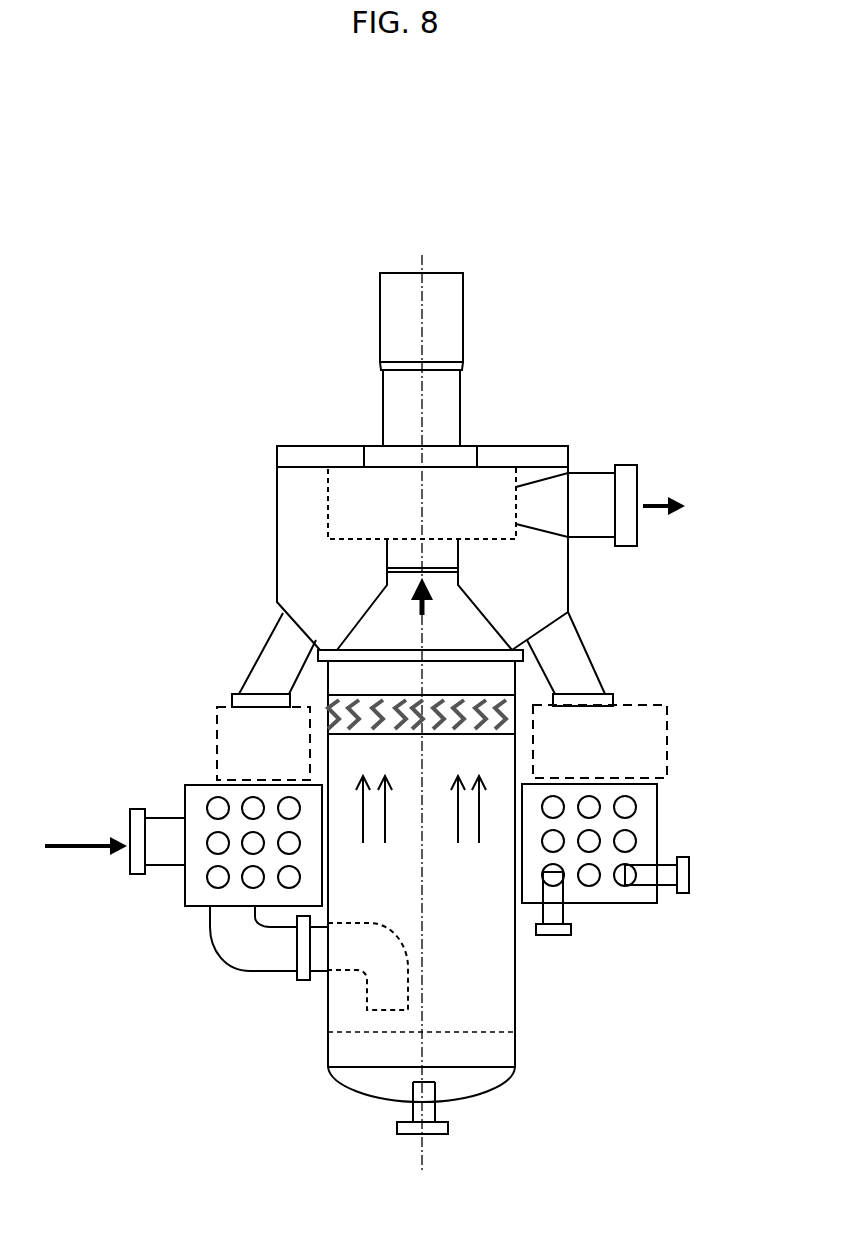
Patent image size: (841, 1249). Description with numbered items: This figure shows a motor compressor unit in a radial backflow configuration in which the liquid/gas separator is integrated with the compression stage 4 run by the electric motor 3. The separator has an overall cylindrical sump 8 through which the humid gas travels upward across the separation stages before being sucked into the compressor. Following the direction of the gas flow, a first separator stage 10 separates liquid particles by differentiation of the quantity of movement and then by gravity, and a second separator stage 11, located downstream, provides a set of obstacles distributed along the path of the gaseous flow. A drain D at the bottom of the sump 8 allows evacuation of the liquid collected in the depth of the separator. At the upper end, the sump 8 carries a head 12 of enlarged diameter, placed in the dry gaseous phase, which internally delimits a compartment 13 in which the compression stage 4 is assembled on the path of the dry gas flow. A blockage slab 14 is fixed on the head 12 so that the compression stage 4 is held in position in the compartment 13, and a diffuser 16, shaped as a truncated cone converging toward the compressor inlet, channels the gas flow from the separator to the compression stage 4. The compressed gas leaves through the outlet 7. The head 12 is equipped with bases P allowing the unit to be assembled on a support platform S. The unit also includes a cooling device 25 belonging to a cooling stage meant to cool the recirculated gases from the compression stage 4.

The motor 3 is at (368, 340).
The compression stage 4 is at (368, 498).
The outlet 7 is at (626, 456).
The sump 8 is at (516, 997).
The first separator stage 10 is at (345, 1033).
The second separator stage 11 is at (458, 706).
The head 12 is at (277, 552).
The compartment 13 is at (556, 581).
The blockage slab 14 is at (530, 460).
The diffuser 16 is at (494, 610).
The cooling device 25 is at (642, 827).
The bases P is at (271, 658).
The support platform S is at (667, 733).
The drain D is at (405, 1127).